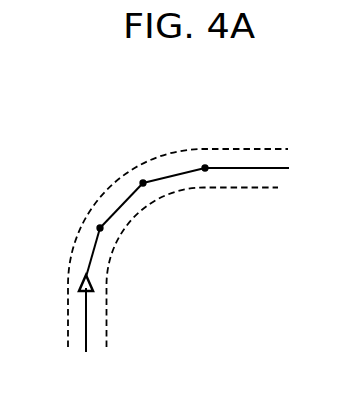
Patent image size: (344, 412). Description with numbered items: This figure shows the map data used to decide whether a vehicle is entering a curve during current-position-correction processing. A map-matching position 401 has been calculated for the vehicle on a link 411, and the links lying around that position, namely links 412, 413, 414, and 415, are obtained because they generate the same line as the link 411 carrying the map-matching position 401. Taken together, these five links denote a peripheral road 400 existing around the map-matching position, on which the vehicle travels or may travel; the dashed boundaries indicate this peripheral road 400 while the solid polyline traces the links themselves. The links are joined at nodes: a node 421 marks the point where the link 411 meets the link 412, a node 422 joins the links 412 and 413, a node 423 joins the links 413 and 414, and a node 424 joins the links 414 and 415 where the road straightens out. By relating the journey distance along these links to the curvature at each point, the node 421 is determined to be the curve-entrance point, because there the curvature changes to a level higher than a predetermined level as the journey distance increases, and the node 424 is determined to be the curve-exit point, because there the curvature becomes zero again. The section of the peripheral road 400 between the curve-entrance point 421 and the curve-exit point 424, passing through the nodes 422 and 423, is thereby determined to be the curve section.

The peripheral road 400 is at (258, 149).
The map-matching position 401 is at (72, 302).
The link 411 is at (87, 308).
The link 412 is at (109, 258).
The link 413 is at (113, 215).
The link 414 is at (180, 175).
The link 415 is at (280, 169).
The node 421 is at (84, 277).
The node 422 is at (100, 228).
The node 423 is at (143, 183).
The node 424 is at (205, 168).